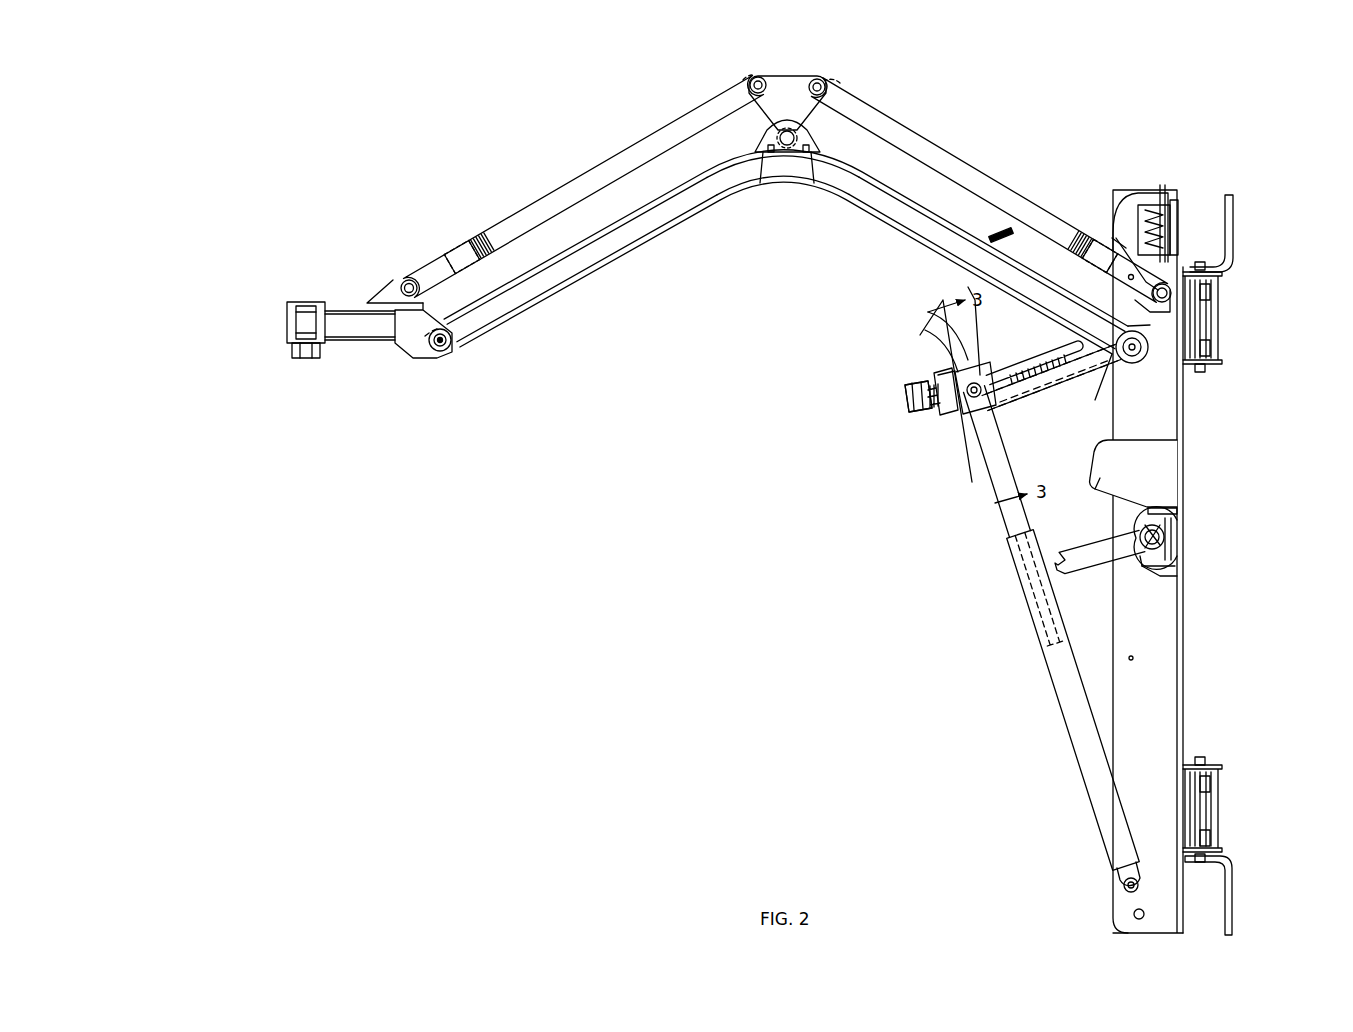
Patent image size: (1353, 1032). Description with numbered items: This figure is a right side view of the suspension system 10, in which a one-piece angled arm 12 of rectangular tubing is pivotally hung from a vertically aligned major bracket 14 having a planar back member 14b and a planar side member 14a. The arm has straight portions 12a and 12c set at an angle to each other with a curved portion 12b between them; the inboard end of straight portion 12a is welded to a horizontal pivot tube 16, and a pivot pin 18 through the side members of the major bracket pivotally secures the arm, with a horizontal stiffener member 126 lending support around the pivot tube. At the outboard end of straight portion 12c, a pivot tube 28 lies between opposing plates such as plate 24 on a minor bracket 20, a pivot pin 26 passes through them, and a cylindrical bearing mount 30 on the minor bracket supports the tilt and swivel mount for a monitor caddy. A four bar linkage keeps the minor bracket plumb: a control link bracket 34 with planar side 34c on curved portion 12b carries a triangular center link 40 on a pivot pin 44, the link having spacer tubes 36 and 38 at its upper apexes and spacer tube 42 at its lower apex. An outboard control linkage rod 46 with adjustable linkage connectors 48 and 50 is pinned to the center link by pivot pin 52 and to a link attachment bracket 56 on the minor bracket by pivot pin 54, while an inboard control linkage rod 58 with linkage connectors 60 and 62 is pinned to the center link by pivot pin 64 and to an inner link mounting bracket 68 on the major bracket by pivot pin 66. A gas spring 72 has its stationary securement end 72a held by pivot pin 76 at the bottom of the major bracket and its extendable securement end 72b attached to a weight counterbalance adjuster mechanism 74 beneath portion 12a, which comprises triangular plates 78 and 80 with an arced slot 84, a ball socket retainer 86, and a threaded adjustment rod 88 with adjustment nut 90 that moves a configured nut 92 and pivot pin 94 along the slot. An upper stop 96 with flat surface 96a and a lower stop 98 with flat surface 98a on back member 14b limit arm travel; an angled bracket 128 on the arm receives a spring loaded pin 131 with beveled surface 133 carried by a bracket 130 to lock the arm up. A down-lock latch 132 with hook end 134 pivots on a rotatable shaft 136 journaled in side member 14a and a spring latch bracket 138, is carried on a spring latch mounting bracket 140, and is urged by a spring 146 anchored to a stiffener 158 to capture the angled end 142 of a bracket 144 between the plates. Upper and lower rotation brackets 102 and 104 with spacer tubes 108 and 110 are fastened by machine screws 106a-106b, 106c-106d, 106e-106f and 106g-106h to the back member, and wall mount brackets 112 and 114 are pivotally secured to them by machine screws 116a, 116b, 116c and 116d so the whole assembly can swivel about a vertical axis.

The suspension system 10 is at (505, 588).
The angled arm 12 is at (565, 330).
The straight arm portion 12a is at (912, 218).
The curved portion 12b is at (782, 187).
The straight arm portion 12c is at (590, 262).
The major bracket 14 is at (1225, 648).
The planar side member 14a is at (1140, 787).
The planar back member 14b is at (1180, 677).
The pivot tube 16 is at (1137, 353).
The pivot pin 18 is at (1148, 360).
The minor bracket 20 is at (345, 320).
The plate 24 is at (407, 338).
The pivot pin 26 is at (451, 354).
The pivot tube 28 is at (425, 336).
The cylindrical bearing mount 30 is at (297, 330).
The control link bracket 34 is at (763, 155).
The planar side 34c is at (812, 155).
The spacer tube 36 is at (840, 83).
The spacer tube 38 is at (743, 80).
The center link 40 is at (782, 83).
The spacer tube 42 is at (763, 127).
The pivot pin 44 is at (800, 135).
The outboard control linkage rod 46 is at (553, 203).
The linkage connector 48 is at (722, 102).
The linkage connector 50 is at (445, 260).
The pivot pin 52 is at (757, 77).
The pivot pin 54 is at (407, 278).
The link attachment bracket 56 is at (385, 302).
The inboard control linkage rod 58 is at (933, 157).
The linkage connector 60 is at (858, 102).
The linkage connector 62 is at (1082, 249).
The pivot pin 64 is at (822, 77).
The pivot pin 66 is at (1117, 232).
The inner link mounting bracket 68 is at (1168, 267).
The gas spring 72 is at (1072, 702).
The stationary securement end 72a is at (1125, 873).
The extendable securement end 72b is at (975, 420).
The weight counterbalance adjuster mechanism 74 is at (895, 305).
The pivot pin 76 is at (1127, 892).
The plate 78 is at (962, 353).
The plate 80 is at (972, 287).
The arced slot 84 is at (1045, 388).
The ball socket retainer 86 is at (938, 407).
The threaded adjustment rod 88 is at (927, 380).
The adjustment nut 90 is at (910, 397).
The configured nut 92 is at (968, 383).
The pivot pin 94 is at (965, 405).
The upper stop 96 is at (1127, 197).
The flat surface 96a is at (1117, 223).
The lower stop 98 is at (1162, 470).
The flat surface 98a is at (1092, 470).
The upper rotation bracket 102 is at (1217, 360).
The lower rotation bracket 104 is at (1213, 765).
The machine screws 106a-106b is at (1190, 287).
The machine screws 106c-106d is at (1200, 343).
The machine screws 106e-106f is at (1205, 783).
The machine screws 106g-106h is at (1205, 837).
The spacer tube 108 is at (1218, 282).
The spacer tube 110 is at (1213, 808).
The wall mount bracket 112 is at (1238, 210).
The wall mount bracket 114 is at (1237, 910).
The machine screw 116a is at (1200, 268).
The machine screw 116b is at (1203, 370).
The machine screw 116c is at (1205, 763).
The machine screw 116d is at (1202, 862).
The horizontal stiffener member 126 is at (1118, 277).
The angled bracket 128 is at (1003, 230).
The bracket 130 is at (1147, 193).
The spring loaded pin 131 is at (1182, 200).
The down-lock latch 132 is at (1107, 557).
The beveled surface 133 is at (1155, 197).
The hook end 134 is at (1035, 587).
The rotatable shaft 136 is at (1173, 532).
The spring latch bracket 138 is at (1173, 558).
The spring latch mounting bracket 140 is at (1163, 567).
The angled end 142 is at (972, 482).
The bracket 144 is at (1000, 410).
The spring 146 is at (1147, 535).
The stiffener 158 is at (1177, 512).